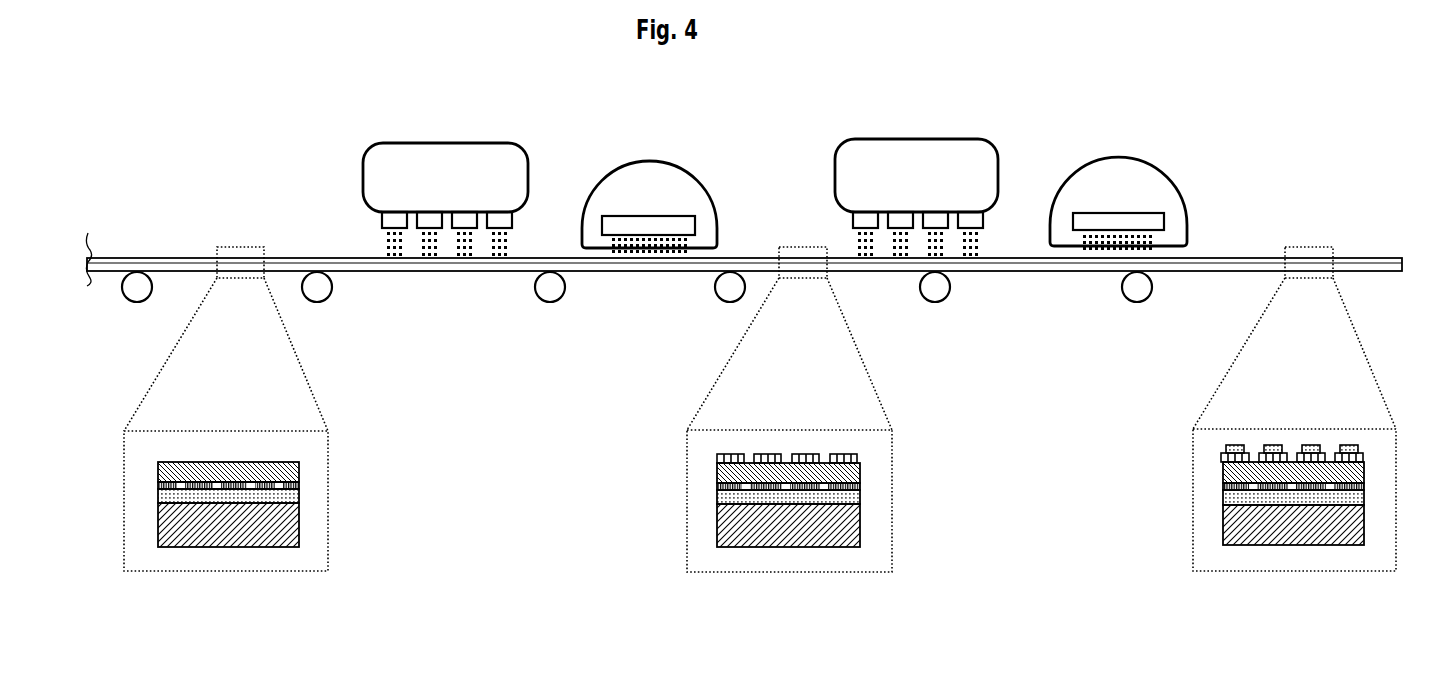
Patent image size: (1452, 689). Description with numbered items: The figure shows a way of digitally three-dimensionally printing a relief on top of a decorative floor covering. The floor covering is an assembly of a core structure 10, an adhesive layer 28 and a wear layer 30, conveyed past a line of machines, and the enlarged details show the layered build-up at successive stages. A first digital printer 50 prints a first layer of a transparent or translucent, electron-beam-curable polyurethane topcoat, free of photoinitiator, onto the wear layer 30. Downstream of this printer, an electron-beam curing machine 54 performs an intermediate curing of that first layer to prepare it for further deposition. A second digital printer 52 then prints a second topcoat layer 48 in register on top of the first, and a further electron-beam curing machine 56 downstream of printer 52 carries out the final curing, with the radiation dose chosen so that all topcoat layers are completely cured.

The core structure 10 is at (305, 489).
The adhesive layer 28 is at (300, 486).
The wear layer 30 is at (299, 469).
The second layer of polyurethane topcoat 48 is at (1357, 449).
The digital printer 50 is at (531, 160).
The digital printer 52 is at (1003, 160).
The electron-beam curing machine 54 is at (694, 178).
The electron-beam curing machine 56 is at (1166, 172).